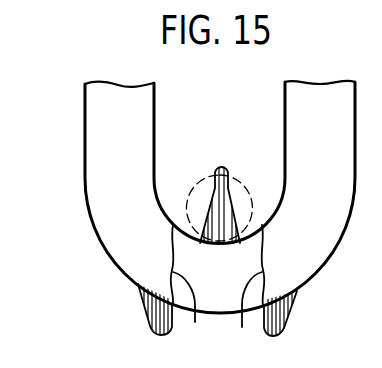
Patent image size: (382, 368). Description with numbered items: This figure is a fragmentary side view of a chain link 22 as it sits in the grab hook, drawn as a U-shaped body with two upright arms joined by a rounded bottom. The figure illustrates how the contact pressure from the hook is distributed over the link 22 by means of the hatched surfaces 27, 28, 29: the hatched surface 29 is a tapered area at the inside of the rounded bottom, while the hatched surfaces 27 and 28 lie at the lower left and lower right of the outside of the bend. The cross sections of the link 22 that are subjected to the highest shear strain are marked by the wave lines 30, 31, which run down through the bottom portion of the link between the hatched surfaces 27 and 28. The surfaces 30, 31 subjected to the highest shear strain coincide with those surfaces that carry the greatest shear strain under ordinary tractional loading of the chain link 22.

The link 22 is at (102, 197).
The hatched surface 27 is at (147, 313).
The hatched surface 28 is at (286, 316).
The hatched surface 29 is at (231, 150).
The wave line 30 is at (192, 292).
The wave line 31 is at (246, 292).